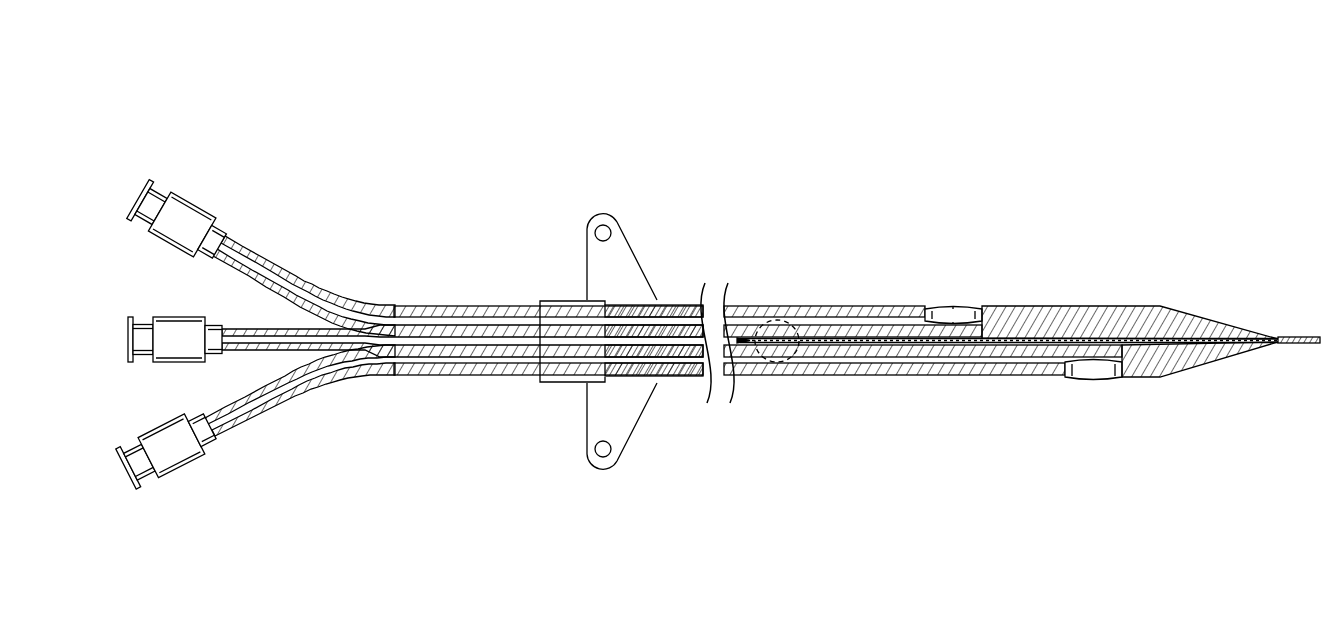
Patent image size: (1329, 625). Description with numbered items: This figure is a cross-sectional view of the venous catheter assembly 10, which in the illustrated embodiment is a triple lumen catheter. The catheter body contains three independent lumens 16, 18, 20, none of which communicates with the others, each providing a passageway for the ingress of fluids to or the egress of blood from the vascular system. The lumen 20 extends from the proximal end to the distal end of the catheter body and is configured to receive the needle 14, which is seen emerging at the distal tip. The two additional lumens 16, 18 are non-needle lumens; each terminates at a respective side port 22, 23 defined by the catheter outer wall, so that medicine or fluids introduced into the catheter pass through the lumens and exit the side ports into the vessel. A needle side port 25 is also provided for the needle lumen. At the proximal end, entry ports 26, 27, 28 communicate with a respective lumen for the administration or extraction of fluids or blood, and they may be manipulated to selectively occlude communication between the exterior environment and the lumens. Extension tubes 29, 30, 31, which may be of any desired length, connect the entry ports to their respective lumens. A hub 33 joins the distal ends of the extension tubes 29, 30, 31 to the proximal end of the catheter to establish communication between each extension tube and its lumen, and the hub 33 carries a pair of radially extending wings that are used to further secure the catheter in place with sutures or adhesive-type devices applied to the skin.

The venous catheter assembly 10 is at (400, 128).
The needle 14 is at (1300, 338).
The lumen 16 is at (695, 360).
The lumen 18 is at (661, 323).
The lumen 20 is at (683, 337).
The side port 22 is at (1100, 368).
The side port 23 is at (953, 315).
The needle side port 25 is at (787, 317).
The entry port 26 is at (147, 473).
The entry port 27 is at (142, 356).
The entry port 28 is at (142, 218).
The extension tube 29 is at (253, 410).
The extension tube 30 is at (252, 342).
The extension tube 31 is at (268, 280).
The hub 33 is at (598, 265).